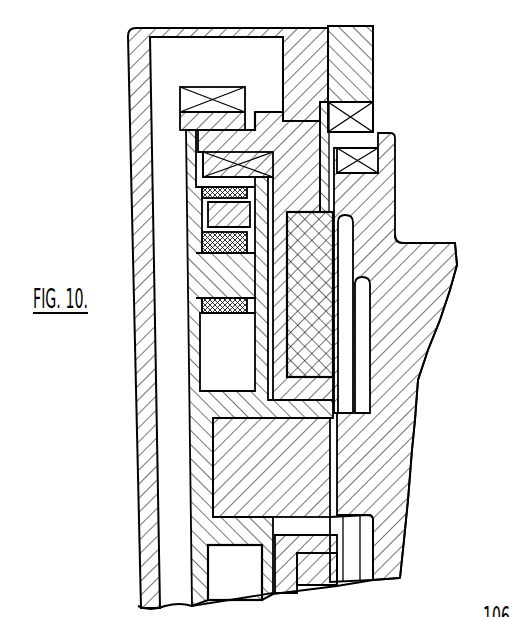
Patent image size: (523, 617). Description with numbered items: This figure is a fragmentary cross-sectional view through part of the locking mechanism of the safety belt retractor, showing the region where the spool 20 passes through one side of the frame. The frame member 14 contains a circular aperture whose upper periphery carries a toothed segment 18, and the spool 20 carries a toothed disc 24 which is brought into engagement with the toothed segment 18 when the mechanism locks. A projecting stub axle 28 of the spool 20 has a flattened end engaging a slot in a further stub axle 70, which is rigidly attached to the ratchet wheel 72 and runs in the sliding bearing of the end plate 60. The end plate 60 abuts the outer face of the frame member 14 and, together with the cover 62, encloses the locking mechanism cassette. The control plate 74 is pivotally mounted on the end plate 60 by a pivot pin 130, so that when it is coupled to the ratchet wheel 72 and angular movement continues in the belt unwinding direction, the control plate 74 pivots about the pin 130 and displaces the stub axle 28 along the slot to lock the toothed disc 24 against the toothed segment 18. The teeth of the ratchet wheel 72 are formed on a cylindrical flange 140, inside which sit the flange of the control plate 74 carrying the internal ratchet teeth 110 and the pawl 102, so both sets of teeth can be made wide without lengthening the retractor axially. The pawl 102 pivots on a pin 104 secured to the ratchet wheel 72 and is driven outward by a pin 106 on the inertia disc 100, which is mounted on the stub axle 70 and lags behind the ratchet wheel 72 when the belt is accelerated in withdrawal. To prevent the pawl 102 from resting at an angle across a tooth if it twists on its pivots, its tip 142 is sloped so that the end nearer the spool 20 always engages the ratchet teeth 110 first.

The frame member 14 is at (362, 79).
The pivot pin 130 is at (298, 133).
The toothed segment 18 is at (365, 118).
The toothed disc 24 is at (380, 183).
The spool 20 is at (432, 245).
The cylindrical flange 140 is at (183, 113).
The internal ratchet teeth 110 is at (196, 164).
The tip of the pawl 142 is at (200, 192).
The pin 106 is at (208, 215).
The pawl 102 is at (205, 245).
The ratchet wheel 72 is at (228, 279).
The pin 104 is at (205, 310).
The cover 62 is at (140, 410).
The stub axle 28 is at (215, 465).
The stub axle 70 is at (213, 571).
The inertia disc 100 is at (262, 575).
The control plate 74 is at (288, 584).
The end plate 60 is at (332, 579).